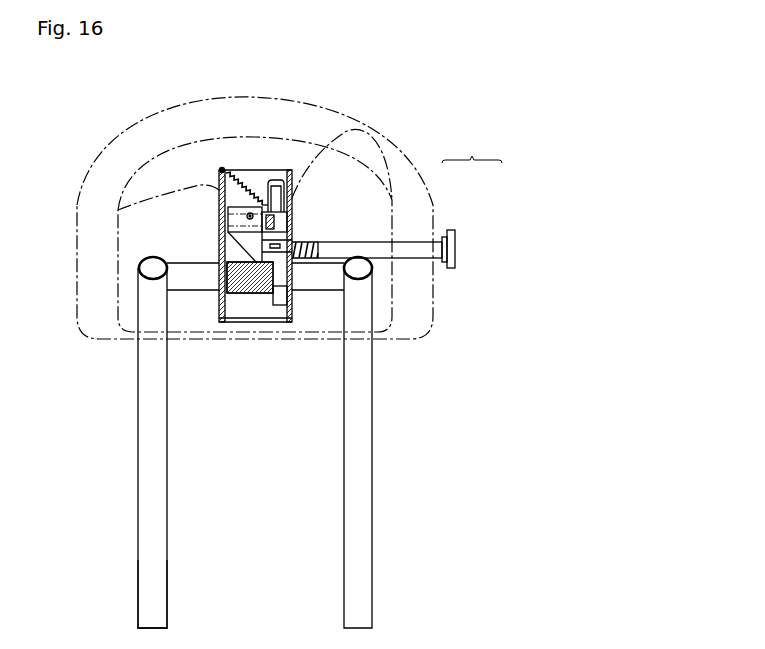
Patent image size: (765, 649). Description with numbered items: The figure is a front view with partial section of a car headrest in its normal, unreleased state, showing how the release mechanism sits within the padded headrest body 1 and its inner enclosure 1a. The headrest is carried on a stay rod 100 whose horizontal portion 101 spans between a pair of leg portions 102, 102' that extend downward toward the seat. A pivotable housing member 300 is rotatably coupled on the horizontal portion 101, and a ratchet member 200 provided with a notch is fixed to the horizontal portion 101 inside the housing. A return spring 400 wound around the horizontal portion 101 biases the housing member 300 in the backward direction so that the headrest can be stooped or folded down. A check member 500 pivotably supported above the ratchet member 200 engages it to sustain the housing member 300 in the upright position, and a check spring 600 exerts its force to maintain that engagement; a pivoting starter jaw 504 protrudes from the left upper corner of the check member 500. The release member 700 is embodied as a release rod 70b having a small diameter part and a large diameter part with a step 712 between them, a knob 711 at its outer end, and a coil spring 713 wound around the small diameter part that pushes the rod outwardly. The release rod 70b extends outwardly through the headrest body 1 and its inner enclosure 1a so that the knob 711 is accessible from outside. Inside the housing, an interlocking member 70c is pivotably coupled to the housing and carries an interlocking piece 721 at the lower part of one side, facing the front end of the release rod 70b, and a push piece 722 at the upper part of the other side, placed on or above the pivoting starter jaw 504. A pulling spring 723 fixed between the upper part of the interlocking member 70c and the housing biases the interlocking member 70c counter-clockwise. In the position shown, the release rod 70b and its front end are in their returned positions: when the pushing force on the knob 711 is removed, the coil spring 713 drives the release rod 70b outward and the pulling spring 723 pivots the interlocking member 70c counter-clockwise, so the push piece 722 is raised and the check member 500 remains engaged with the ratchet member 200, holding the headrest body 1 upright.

The headrest body 1 is at (128, 127).
The inner enclosure 1a is at (190, 147).
The interlocking member 70c is at (114, 206).
The stay rod 100 is at (136, 503).
The horizontal portion 101 is at (175, 293).
The leg portion 102 is at (112, 442).
The leg portion 102' is at (399, 442).
The ratchet member 200 is at (282, 304).
The pivotable housing member 300 is at (273, 169).
The return spring 400 is at (232, 303).
The check member 500 is at (298, 238).
The pivoting starter jaw 504 is at (287, 303).
The check spring 600 is at (265, 169).
The release member 700 is at (472, 153).
The release rod 70b is at (436, 247).
The knob 711 is at (452, 247).
The step 712 is at (303, 259).
The coil spring 713 is at (340, 242).
The interlocking piece 721 is at (250, 294).
The push piece 722 is at (312, 238).
The pulling spring 723 is at (242, 168).